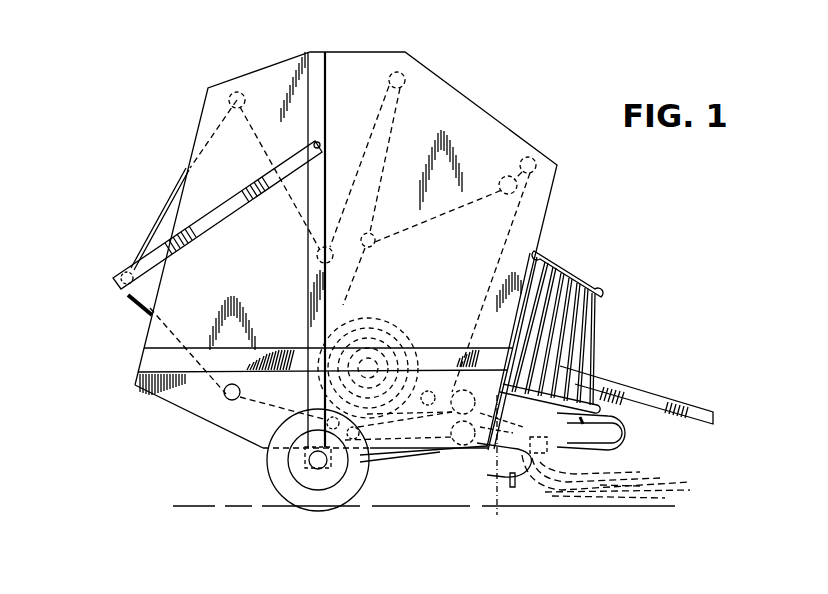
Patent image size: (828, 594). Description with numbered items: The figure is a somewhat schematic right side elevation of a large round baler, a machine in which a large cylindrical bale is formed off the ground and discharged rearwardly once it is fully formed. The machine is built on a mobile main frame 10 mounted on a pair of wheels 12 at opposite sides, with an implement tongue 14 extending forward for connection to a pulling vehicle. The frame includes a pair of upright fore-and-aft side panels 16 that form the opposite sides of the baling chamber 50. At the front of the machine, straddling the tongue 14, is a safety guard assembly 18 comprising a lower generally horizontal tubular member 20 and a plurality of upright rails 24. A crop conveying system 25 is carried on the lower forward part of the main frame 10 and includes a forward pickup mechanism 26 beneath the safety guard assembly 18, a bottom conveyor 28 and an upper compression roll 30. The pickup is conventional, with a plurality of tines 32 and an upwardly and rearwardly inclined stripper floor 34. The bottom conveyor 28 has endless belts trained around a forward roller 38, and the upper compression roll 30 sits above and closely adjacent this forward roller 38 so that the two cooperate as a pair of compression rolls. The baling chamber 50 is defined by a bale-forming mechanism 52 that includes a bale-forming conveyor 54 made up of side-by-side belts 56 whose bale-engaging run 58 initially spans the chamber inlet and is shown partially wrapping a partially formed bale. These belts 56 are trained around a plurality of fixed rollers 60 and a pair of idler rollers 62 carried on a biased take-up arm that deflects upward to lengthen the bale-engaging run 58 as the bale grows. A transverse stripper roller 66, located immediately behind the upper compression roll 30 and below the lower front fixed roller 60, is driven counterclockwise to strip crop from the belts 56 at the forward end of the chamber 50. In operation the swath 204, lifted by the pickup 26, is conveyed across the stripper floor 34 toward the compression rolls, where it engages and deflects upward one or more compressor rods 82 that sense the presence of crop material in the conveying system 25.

The mobile main frame 10 is at (150, 162).
The wheels 12 is at (265, 462).
The implement tongue 14 is at (637, 396).
The side panels 16 is at (346, 251).
The safety guard assembly 18 is at (587, 269).
The lower tubular member 20 is at (580, 432).
The upright rails 24 is at (597, 330).
The crop conveying system 25 is at (540, 503).
The pickup mechanism 26 is at (483, 485).
The bottom conveyor 28 is at (399, 468).
The upper compression roll 30 is at (325, 349).
The tines 32 is at (518, 480).
The stripper floor 34 is at (508, 466).
The forward roller 38 is at (460, 436).
The baling chamber 50 is at (312, 385).
The bale-forming mechanism 52 is at (127, 241).
The bale-forming conveyor 54 is at (127, 309).
The belts 56 is at (497, 258).
The bale-engaging run 58 is at (344, 316).
The fixed rollers 60 is at (235, 108).
The idler rollers 62 is at (318, 255).
The stripper roller 66 is at (428, 391).
The compressor rod 82 is at (632, 435).
The swath 204 is at (645, 489).